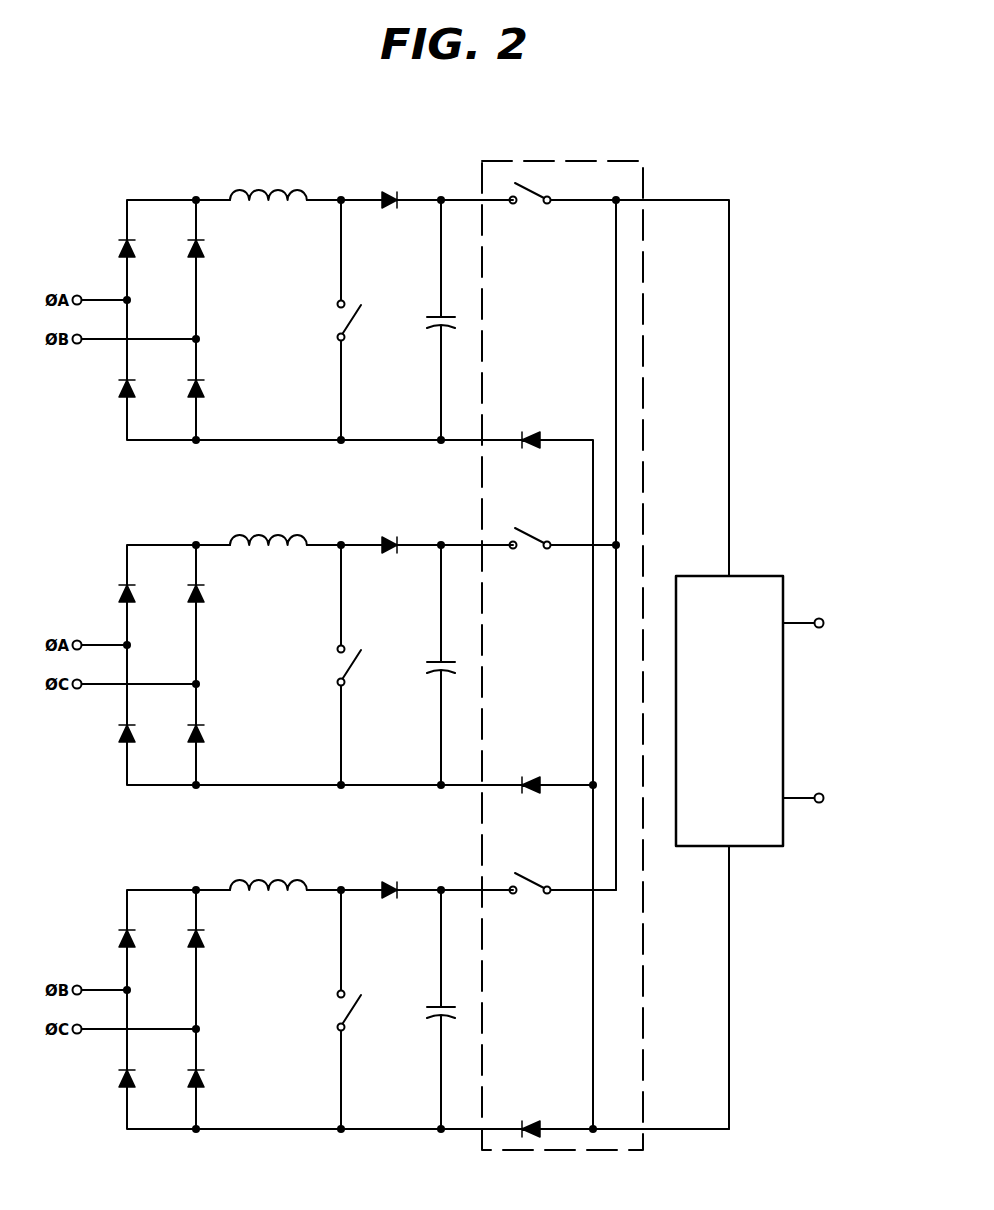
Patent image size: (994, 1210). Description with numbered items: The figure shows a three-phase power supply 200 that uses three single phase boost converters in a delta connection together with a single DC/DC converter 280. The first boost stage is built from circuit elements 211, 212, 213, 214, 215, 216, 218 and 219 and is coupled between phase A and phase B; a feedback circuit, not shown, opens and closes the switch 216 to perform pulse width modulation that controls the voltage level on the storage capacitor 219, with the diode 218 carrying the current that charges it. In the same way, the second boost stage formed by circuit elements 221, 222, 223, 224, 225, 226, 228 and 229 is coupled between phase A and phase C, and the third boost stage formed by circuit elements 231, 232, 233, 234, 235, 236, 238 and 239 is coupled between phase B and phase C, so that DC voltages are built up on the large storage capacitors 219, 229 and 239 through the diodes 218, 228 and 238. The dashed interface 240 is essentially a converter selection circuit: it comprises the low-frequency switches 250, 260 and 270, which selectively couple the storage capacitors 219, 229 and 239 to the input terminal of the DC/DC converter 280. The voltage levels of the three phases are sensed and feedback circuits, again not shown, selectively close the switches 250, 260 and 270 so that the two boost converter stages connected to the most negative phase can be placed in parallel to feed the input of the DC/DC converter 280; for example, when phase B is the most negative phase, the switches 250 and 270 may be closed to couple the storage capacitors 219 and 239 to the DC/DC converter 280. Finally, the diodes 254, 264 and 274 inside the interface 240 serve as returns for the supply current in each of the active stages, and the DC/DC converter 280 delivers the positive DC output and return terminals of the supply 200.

The three-phase power supply 200 is at (122, 140).
The circuit element of first boost stage 211 is at (126, 241).
The circuit element of first boost stage 212 is at (199, 257).
The circuit element of first boost stage 213 is at (120, 388).
The circuit element of first boost stage 214 is at (199, 383).
The circuit element of first boost stage 215 is at (243, 192).
The switch 216 is at (351, 322).
The diode 218 is at (392, 208).
The storage capacitor 219 is at (435, 316).
The circuit element of second boost stage 221 is at (126, 586).
The circuit element of second boost stage 222 is at (199, 602).
The circuit element of second boost stage 223 is at (120, 733).
The circuit element of second boost stage 224 is at (199, 728).
The circuit element of second boost stage 225 is at (243, 537).
The circuit element of second boost stage 226 is at (351, 667).
The diode 228 is at (392, 553).
The storage capacitor 229 is at (435, 661).
The circuit element of third boost stage 231 is at (126, 931).
The circuit element of third boost stage 232 is at (199, 947).
The circuit element of third boost stage 233 is at (120, 1077).
The circuit element of third boost stage 234 is at (199, 1072).
The circuit element of third boost stage 235 is at (243, 882).
The circuit element of third boost stage 236 is at (351, 1011).
The diode 238 is at (392, 898).
The storage capacitor 239 is at (435, 1006).
The interface 240 is at (618, 161).
The low-frequency switch 250 is at (530, 205).
The diode 254 is at (523, 434).
The low-frequency switch 260 is at (530, 550).
The diode 264 is at (523, 779).
The low-frequency switch 270 is at (530, 894).
The diode 274 is at (523, 1123).
The DC/DC converter 280 is at (758, 576).